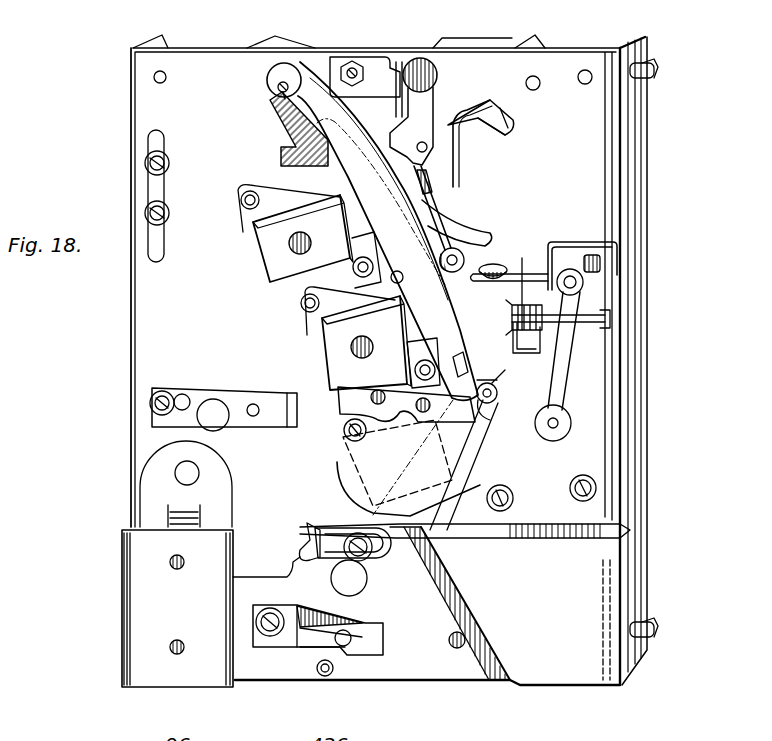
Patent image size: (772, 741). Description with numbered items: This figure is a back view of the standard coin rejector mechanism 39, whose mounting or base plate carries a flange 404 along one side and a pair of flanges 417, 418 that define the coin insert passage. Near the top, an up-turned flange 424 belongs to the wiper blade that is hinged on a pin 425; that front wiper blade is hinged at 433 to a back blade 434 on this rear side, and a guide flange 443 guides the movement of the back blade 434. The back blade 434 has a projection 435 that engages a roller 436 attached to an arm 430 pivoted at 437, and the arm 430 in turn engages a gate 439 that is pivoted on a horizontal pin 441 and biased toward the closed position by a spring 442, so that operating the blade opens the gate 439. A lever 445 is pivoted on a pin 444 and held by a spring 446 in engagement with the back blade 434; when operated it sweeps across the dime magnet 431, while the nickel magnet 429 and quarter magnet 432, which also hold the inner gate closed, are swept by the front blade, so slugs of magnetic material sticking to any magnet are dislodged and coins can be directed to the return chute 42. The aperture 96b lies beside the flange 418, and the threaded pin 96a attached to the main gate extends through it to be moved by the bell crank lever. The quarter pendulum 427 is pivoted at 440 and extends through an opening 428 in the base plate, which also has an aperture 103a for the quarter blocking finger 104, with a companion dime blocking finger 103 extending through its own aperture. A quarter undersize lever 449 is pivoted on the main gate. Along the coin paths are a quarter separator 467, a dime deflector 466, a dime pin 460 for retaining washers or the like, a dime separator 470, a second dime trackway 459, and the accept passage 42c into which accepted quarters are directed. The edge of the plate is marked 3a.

The flange 404 is at (640, 173).
The up-turned flange 424 is at (283, 40).
The flange 417 is at (540, 43).
The pin 425 is at (352, 60).
The flange 418 is at (399, 60).
The hinge 433 is at (276, 88).
The back blade 434 is at (287, 104).
The pivot 440 is at (437, 77).
The quarter pendulum 427 is at (426, 143).
The aperture 103a is at (487, 110).
The quarter undersize lever 449 is at (512, 120).
The quarter blocking finger 104 is at (462, 164).
The projection 435 is at (432, 213).
The opening 428 is at (490, 230).
The pivot 437 is at (495, 264).
The arm 430 is at (556, 256).
The aperture 96b is at (617, 234).
The threaded pin 96a is at (598, 284).
The spring 442 is at (536, 310).
The horizontal pin 441 is at (588, 323).
The roller 436 is at (443, 258).
The guide flange 443 is at (466, 360).
The dime blocking finger 103 is at (546, 351).
The nickel magnet 429 is at (266, 262).
The coin rejector mechanism 39 is at (196, 309).
The plate edge 3a is at (158, 331).
The quarter separator 467 is at (240, 390).
The quarter magnet 432 is at (326, 358).
The spring 446 is at (356, 401).
The lever 445 is at (446, 455).
The pin 444 is at (511, 419).
The dime magnet 431 is at (356, 482).
The dime pin 460 is at (560, 422).
The gate 439 is at (595, 442).
The accept passage 42c is at (152, 526).
The dime deflector 466 is at (307, 530).
The return chute 42 is at (623, 524).
The dime separator 470 is at (372, 623).
The second dime trackway 459 is at (424, 688).